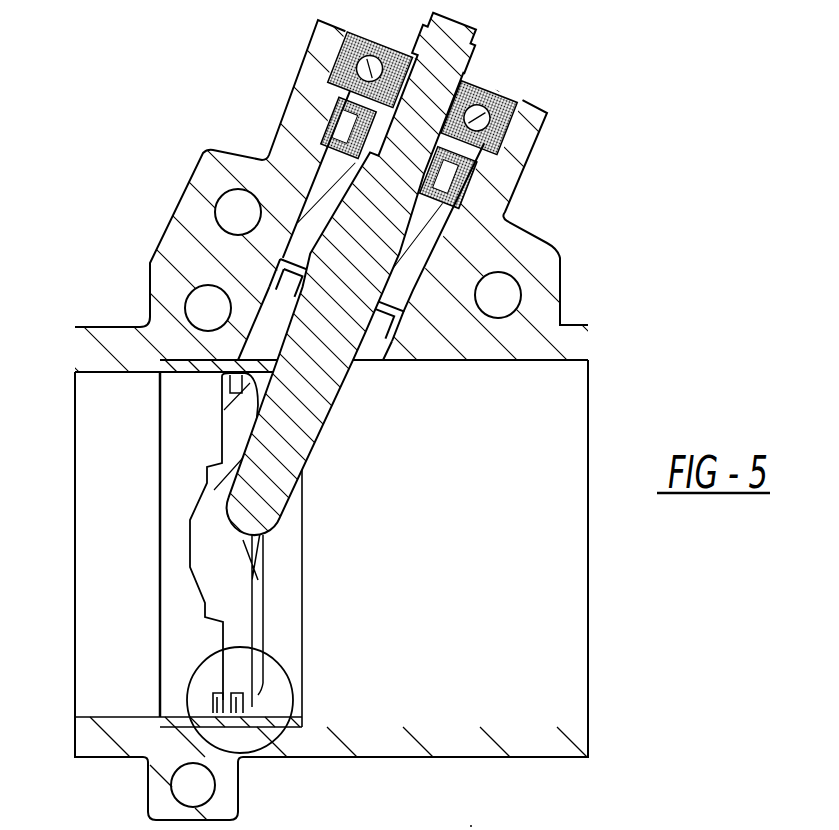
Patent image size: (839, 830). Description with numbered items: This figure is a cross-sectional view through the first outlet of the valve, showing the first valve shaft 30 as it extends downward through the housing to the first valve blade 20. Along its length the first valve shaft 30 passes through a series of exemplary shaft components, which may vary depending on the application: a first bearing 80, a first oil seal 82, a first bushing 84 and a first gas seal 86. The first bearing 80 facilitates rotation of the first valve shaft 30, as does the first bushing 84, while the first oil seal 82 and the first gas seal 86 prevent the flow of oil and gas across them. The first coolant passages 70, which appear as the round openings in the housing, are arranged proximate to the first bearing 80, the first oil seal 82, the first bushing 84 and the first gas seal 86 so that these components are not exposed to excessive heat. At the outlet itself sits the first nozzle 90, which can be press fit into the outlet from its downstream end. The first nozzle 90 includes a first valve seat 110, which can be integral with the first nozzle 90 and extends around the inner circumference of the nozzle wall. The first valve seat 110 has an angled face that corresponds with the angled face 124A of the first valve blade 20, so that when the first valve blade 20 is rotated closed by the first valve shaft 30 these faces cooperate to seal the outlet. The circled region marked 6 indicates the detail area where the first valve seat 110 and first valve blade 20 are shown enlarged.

The first valve blade 20 is at (212, 547).
The first valve shaft 30 is at (453, 26).
The first coolant passages 70 is at (238, 188).
The first bearing 80 is at (487, 120).
The first oil seal 82 is at (477, 173).
The first bushing 84 is at (450, 247).
The first gas seal 86 is at (457, 337).
The first nozzle 90 is at (177, 717).
The first valve seat 110 is at (186, 702).
The detail view indicator 6 is at (212, 652).
The angled face 124A is at (494, 816).